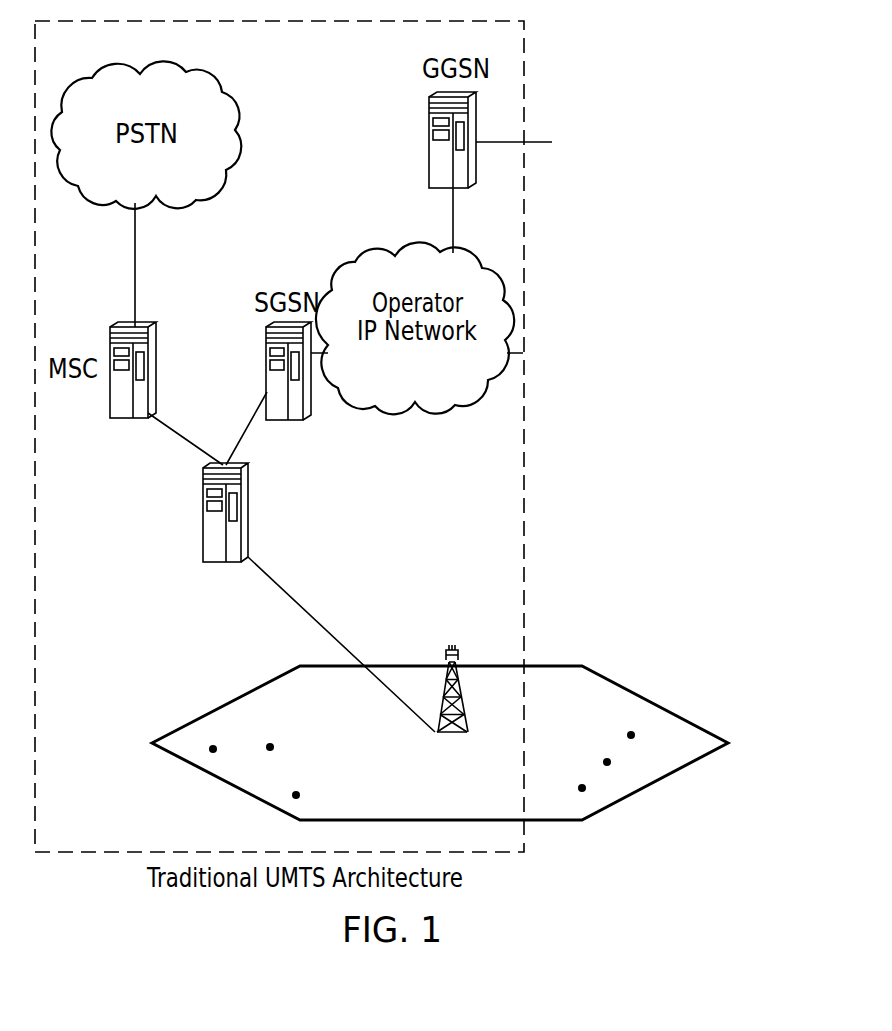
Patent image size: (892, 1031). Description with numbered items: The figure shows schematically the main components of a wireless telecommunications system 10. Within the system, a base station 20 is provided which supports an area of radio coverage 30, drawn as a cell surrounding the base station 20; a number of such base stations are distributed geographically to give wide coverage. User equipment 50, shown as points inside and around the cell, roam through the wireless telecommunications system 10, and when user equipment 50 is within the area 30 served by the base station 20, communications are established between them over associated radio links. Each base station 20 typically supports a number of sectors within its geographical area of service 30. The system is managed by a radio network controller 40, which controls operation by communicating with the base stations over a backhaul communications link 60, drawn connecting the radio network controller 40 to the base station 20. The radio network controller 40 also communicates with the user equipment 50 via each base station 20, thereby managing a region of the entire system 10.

The wireless telecommunications system 10 is at (586, 45).
The base station 20 is at (447, 676).
The area of radio coverage 30 is at (692, 722).
The radio network controller 40 is at (202, 527).
The user equipment 50 is at (294, 795).
The backhaul communications link 60 is at (277, 586).